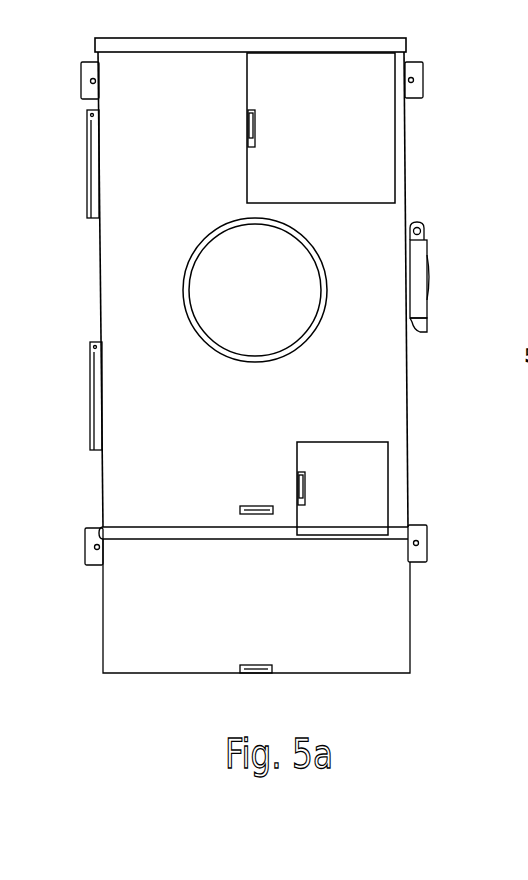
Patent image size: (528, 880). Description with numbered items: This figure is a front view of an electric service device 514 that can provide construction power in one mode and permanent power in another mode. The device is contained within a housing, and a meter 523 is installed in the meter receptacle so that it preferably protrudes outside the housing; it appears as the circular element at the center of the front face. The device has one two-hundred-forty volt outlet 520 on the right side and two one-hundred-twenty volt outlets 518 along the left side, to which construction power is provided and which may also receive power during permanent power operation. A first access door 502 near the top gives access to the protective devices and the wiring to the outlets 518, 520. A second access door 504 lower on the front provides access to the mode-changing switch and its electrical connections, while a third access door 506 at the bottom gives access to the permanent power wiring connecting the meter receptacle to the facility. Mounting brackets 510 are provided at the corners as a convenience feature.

The first access door 502 is at (378, 169).
The second access door 504 is at (378, 475).
The third access door 506 is at (137, 658).
The mounting brackets 510 is at (82, 73).
The electric service device 514 is at (406, 692).
The 120 volt outlets 518 is at (88, 188).
The 240 volt outlet 520 is at (427, 250).
The meter 523 is at (256, 338).